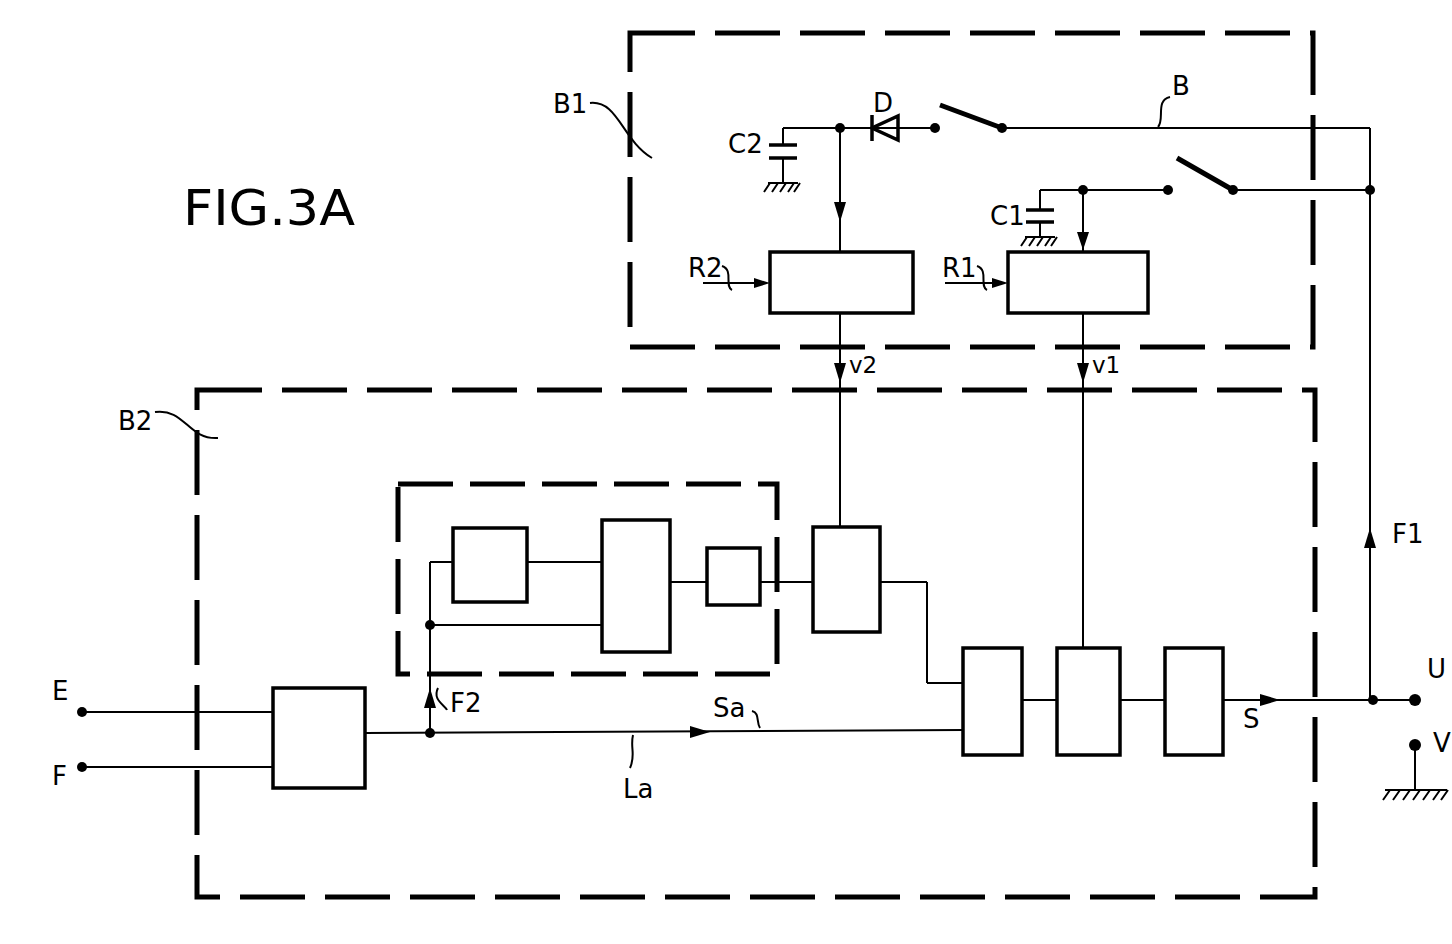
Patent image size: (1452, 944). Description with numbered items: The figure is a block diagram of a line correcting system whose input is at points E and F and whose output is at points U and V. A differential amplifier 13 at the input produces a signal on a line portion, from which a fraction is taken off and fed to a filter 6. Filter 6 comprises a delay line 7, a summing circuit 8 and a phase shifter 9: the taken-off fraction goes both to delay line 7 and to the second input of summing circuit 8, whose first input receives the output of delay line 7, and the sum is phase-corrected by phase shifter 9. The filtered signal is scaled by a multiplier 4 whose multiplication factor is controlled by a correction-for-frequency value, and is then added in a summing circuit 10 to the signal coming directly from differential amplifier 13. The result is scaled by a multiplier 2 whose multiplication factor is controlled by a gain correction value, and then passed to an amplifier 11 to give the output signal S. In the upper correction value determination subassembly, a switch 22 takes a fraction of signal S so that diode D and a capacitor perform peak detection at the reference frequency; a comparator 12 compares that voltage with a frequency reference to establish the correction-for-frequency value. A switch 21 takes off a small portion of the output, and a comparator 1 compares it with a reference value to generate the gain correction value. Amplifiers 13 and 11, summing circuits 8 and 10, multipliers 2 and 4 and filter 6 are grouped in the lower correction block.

The comparator 1 is at (1123, 280).
The multiplier 2 is at (1088, 738).
The multiplier 4 is at (870, 542).
The filter 6 is at (418, 505).
The delay line 7 is at (490, 540).
The summing circuit 8 is at (632, 535).
The phase shifter 9 is at (735, 555).
The summing circuit 10 is at (985, 745).
The amplifier 11 is at (1195, 745).
The comparator 12 is at (862, 265).
The differential amplifier 13 is at (320, 772).
The switch 21 is at (1213, 173).
The switch 22 is at (972, 110).